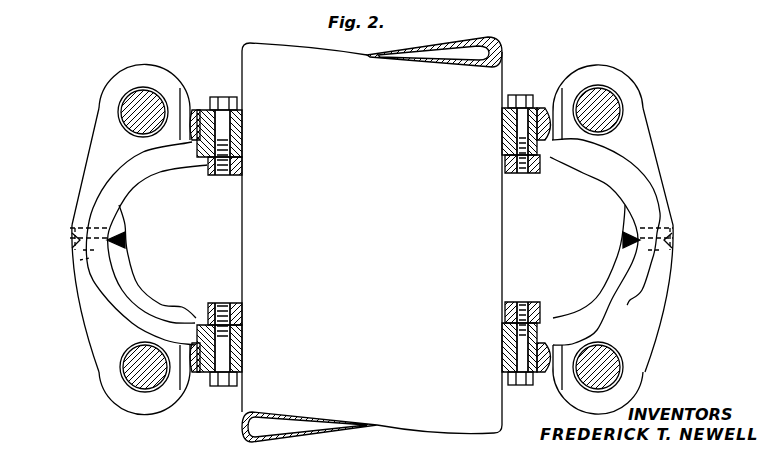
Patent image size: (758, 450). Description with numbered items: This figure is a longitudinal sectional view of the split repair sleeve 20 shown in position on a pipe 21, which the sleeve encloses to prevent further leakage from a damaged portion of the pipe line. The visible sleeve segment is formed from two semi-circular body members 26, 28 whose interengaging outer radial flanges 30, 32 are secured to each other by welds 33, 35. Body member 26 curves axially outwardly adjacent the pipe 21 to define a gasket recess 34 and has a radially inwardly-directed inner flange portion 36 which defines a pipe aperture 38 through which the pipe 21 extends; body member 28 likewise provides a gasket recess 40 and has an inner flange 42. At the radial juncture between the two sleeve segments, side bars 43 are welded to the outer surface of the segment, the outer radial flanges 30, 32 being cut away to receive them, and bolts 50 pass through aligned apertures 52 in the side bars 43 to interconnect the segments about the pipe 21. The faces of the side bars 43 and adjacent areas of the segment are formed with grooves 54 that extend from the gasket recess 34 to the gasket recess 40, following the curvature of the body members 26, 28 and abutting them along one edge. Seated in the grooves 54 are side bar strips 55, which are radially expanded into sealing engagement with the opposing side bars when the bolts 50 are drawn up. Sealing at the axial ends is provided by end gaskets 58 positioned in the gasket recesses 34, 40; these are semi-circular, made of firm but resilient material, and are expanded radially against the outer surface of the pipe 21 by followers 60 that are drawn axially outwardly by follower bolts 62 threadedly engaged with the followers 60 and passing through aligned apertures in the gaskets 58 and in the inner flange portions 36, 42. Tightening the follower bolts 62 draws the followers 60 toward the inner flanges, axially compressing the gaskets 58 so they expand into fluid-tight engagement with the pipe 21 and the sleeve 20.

The split repair sleeve 20 is at (92, 333).
The pipe 21 is at (494, 82).
The body member 26 is at (187, 288).
The body member 28 is at (143, 182).
The outer radial flange 30 is at (75, 265).
The outer radial flange 32 is at (70, 228).
The weld 33 is at (72, 248).
The gasket recess 34 is at (200, 373).
The weld 35 is at (132, 238).
The inner flange portion 36 is at (242, 367).
The pipe aperture 38 is at (509, 386).
The gasket recess 40 is at (195, 110).
The inner flange 42 is at (238, 116).
The side bar 43 is at (97, 155).
The bolt 50 is at (123, 103).
The aperture 52 is at (142, 390).
The groove 54 is at (97, 288).
The side bar strip 55 is at (125, 308).
The end gasket 58 is at (242, 140).
The follower 60 is at (242, 167).
The follower bolt 62 is at (220, 175).